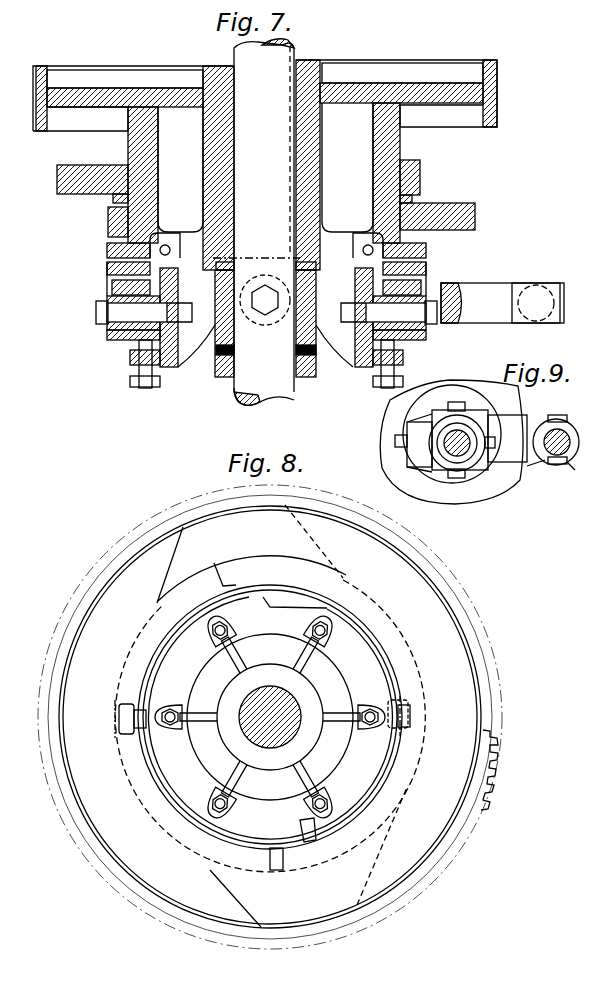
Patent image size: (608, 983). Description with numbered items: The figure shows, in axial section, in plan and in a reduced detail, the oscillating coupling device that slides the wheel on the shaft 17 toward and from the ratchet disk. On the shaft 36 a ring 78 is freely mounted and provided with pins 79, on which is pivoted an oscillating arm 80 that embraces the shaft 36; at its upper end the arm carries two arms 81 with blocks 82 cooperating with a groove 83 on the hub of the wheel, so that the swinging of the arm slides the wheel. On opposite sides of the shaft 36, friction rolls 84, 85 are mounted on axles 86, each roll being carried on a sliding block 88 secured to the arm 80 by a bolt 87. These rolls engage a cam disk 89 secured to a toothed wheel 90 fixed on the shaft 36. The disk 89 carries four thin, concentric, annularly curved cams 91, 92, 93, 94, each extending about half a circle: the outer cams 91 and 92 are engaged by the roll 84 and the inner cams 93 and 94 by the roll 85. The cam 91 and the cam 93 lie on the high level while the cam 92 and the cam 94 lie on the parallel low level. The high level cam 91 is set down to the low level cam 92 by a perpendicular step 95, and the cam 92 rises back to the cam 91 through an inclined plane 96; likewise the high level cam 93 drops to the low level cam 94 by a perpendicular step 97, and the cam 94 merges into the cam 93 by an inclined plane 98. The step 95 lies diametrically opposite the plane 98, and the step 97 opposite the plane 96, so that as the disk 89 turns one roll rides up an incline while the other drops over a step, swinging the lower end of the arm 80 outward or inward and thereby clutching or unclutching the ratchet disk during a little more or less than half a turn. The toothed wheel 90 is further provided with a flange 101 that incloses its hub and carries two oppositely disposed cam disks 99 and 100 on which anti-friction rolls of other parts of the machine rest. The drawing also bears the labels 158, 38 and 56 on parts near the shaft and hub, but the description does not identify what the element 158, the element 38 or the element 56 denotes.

In FIG. 7, the shaft 36 is at (250, 60).
In FIG. 9, the shaft 36 is at (457, 447).
In FIG. 7, the toothed wheel 90 is at (308, 66).
In FIG. 7, the flange 101 is at (385, 133).
In FIG. 7, the cam disk 99 is at (75, 181).
In FIG. 8, the cam disk 99 is at (140, 598).
In FIG. 7, the cam disk 100 is at (475, 215).
In FIG. 8, the cam disk 100 is at (420, 815).
In FIG. 7, the inclined plane 98 is at (289, 235).
In FIG. 8, the inclined plane 98 is at (308, 840).
In FIG. 7, the inclined plane 96 is at (280, 256).
In FIG. 8, the inclined plane 96 is at (278, 870).
In FIG. 7, the pins 79 is at (265, 300).
In FIG. 9, the pins 79 is at (456, 398).
In FIG. 7, the ring 78 is at (222, 340).
In FIG. 9, the ring 78 is at (440, 442).
In FIG. 7, the seal 158 is at (312, 360).
In FIG. 7, the cam disk 89 is at (107, 250).
In FIG. 7, the friction roll 85 is at (107, 268).
In FIG. 8, the friction roll 85 is at (122, 710).
In FIG. 7, the axles 86 is at (112, 288).
In FIG. 7, the bolt 87 is at (128, 312).
In FIG. 7, the sliding block 88 is at (128, 336).
In FIG. 7, the friction roll 84 is at (426, 250).
In FIG. 8, the friction roll 84 is at (405, 716).
In FIG. 7, the oscillating arm 80 is at (470, 315).
In FIG. 9, the oscillating arm 80 is at (485, 462).
In FIG. 7, the blocks 82 is at (528, 300).
In FIG. 9, the blocks 82 is at (564, 444).
In FIG. 9, the arms 81 is at (556, 444).
In FIG. 9, the groove 83 is at (578, 469).
In FIG. 9, the ring 38 is at (548, 420).
In FIG. 9, the shaft 17 is at (536, 479).
In FIG. 8, the low level cam 92 is at (146, 654).
In FIG. 8, the high level cam 93 is at (340, 630).
In FIG. 8, the perpendicular step 95 is at (214, 563).
In FIG. 8, the perpendicular step 97 is at (263, 597).
In FIG. 8, the high level cam 91 is at (366, 818).
In FIG. 8, the low level cam 94 is at (185, 798).
In FIG. 8, the spider hub 56 is at (284, 724).